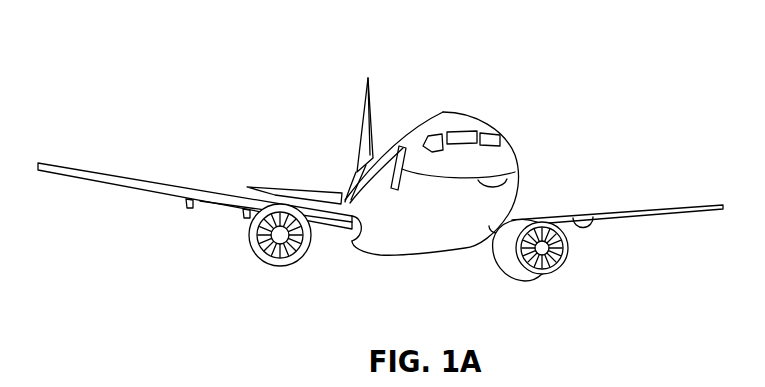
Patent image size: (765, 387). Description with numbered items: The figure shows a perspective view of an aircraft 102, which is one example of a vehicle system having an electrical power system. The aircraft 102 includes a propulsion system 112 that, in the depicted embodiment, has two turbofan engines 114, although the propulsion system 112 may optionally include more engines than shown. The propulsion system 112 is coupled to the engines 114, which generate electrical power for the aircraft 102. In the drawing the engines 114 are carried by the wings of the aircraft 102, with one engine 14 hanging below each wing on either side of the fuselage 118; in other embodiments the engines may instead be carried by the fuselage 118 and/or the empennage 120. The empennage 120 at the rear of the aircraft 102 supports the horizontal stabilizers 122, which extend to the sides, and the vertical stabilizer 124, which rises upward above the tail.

The aircraft 102 is at (190, 55).
The propulsion system 112 is at (604, 276).
The turbofan engine 114 is at (535, 278).
The engine 14 is at (280, 266).
The fuselage 118 is at (517, 157).
The empennage 120 is at (358, 188).
The horizontal stabilizer 122 is at (273, 188).
The vertical stabilizer 124 is at (367, 110).